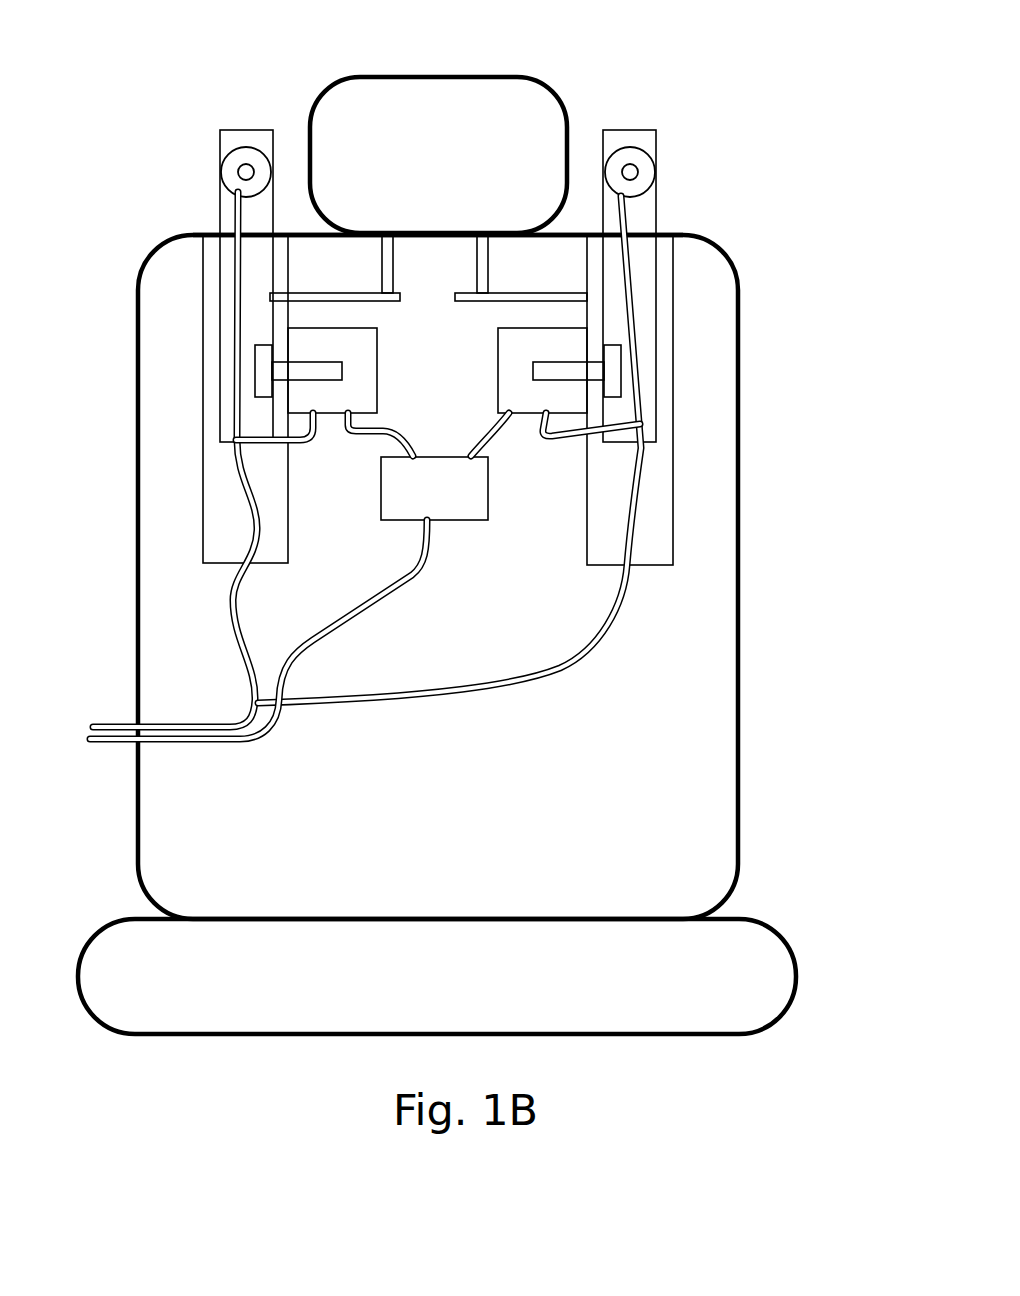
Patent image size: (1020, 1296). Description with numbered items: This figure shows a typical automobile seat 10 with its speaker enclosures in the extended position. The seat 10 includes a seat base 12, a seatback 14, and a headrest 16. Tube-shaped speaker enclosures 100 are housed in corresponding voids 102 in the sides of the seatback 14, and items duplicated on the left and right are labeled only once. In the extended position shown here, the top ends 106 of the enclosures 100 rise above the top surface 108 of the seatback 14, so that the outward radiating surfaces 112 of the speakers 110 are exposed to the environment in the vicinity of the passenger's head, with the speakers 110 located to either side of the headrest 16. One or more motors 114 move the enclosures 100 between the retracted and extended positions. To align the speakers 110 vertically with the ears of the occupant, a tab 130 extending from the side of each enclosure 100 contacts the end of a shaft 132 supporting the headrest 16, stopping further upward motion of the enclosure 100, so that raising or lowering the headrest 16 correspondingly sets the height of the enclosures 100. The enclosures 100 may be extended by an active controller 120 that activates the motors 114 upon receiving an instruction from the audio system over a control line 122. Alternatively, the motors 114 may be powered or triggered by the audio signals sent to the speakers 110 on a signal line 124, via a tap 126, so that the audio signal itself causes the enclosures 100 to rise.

The automobile seat 10 is at (788, 243).
The seat base 12 is at (778, 931).
The seatback 14 is at (739, 631).
The headrest 16 is at (549, 82).
The speaker enclosure 100 is at (224, 380).
The void 102 is at (204, 414).
The top end 106 is at (233, 128).
The top surface 108 is at (190, 233).
The speaker 110 is at (248, 146).
The outward radiating surface 112 is at (633, 155).
The motor 114 is at (380, 390).
The active controller 120 is at (488, 491).
The control line 122 is at (316, 638).
The signal line 124 is at (250, 667).
The tap 126 is at (345, 420).
The tab 130 is at (398, 298).
The shaft 132 is at (395, 262).